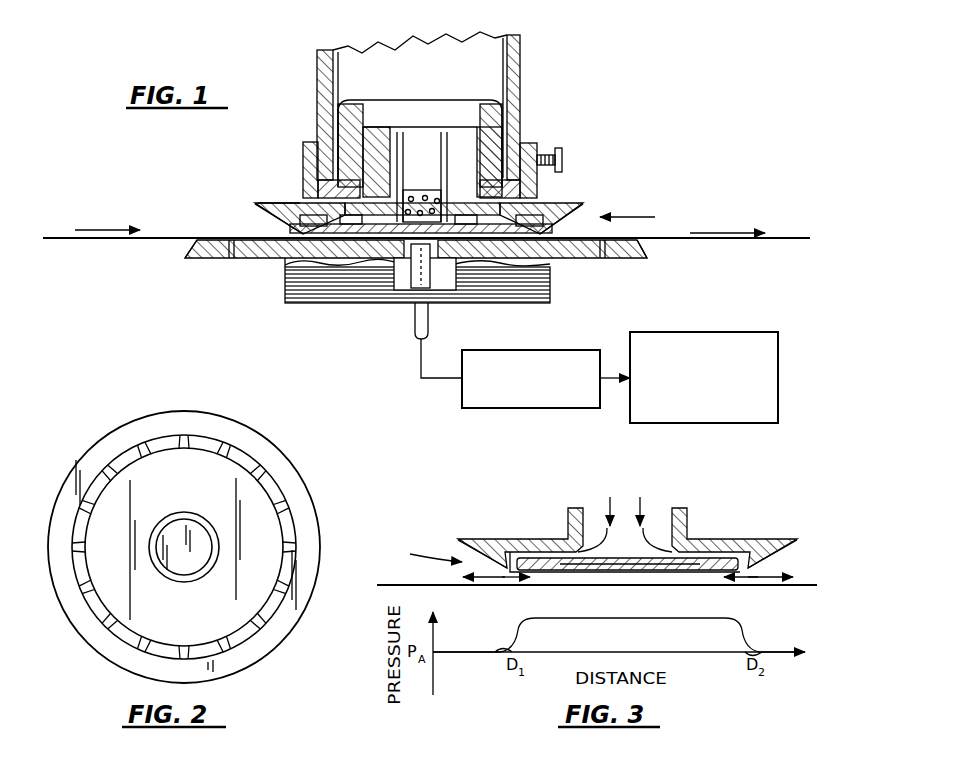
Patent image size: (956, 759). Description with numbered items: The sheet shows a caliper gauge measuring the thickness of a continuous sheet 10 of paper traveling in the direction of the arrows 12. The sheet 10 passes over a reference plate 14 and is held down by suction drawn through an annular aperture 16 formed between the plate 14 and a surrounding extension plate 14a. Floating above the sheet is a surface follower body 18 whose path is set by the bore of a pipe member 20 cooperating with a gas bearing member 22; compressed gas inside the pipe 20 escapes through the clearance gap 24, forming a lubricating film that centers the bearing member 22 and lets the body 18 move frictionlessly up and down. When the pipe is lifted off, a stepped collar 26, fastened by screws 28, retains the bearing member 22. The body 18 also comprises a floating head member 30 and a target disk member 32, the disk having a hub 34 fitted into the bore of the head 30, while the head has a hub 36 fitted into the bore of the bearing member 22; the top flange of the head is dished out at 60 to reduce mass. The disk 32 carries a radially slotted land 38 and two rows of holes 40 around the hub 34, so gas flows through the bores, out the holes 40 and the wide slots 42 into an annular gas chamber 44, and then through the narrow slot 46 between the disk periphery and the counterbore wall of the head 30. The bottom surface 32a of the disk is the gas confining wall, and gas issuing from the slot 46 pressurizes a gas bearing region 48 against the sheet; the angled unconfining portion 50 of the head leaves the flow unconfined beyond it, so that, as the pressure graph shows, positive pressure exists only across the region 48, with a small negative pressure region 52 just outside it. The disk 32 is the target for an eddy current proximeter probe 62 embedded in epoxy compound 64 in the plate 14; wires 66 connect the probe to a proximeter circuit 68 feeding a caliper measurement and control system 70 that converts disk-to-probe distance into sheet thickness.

In FIG. 1, the sheet 10 is at (183, 236).
In FIG. 3, the sheet 10 is at (397, 584).
In FIG. 1, the arrows 12 is at (105, 228).
In FIG. 1, the reference plate 14 is at (275, 252).
In FIG. 1, the extension plate 14a is at (196, 254).
In FIG. 1, the annular aperture 16 is at (231, 258).
In FIG. 1, the surface follower body 18 is at (637, 217).
In FIG. 3, the surface follower body 18 is at (592, 557).
In FIG. 1, the pipe member 20 is at (520, 58).
In FIG. 1, the gas bearing member 22 is at (500, 124).
In FIG. 1, the clearance gap 24 is at (345, 108).
In FIG. 1, the stepped collar 26 is at (303, 168).
In FIG. 1, the screws 28 is at (553, 158).
In FIG. 1, the floating head member 30 is at (566, 204).
In FIG. 3, the floating head member 30 is at (492, 548).
In FIG. 1, the target disk member 32 is at (540, 238).
In FIG. 2, the target disk member 32 is at (258, 418).
In FIG. 3, the target disk member 32 is at (556, 572).
In FIG. 3, the bottom surface 32a is at (590, 572).
In FIG. 1, the hub 34 is at (410, 198).
In FIG. 2, the hub 34 is at (155, 562).
In FIG. 1, the hub 36 is at (448, 129).
In FIG. 2, the radially slotted land 38 is at (140, 447).
In FIG. 1, the holes 40 is at (417, 212).
In FIG. 2, the slots 42 is at (96, 478).
In FIG. 1, the annular gas chamber 44 is at (300, 217).
In FIG. 1, the slot 46 is at (300, 228).
In FIG. 3, the slot 46 is at (495, 564).
In FIG. 3, the gas bearing region 48 is at (652, 574).
In FIG. 1, the unconfining portion 50 is at (588, 214).
In FIG. 3, the unconfining portion 50 is at (800, 544).
In FIG. 3, the region of negative pressure 52 is at (498, 655).
In FIG. 1, the dished-out top flange 60 is at (300, 204).
In FIG. 1, the eddy current proximeter probe 62 is at (440, 290).
In FIG. 1, the epoxy compound 64 is at (400, 300).
In FIG. 1, the wires 66 is at (428, 380).
In FIG. 1, the proximeter circuit 68 is at (535, 350).
In FIG. 1, the caliper measurement and control system 70 is at (693, 332).